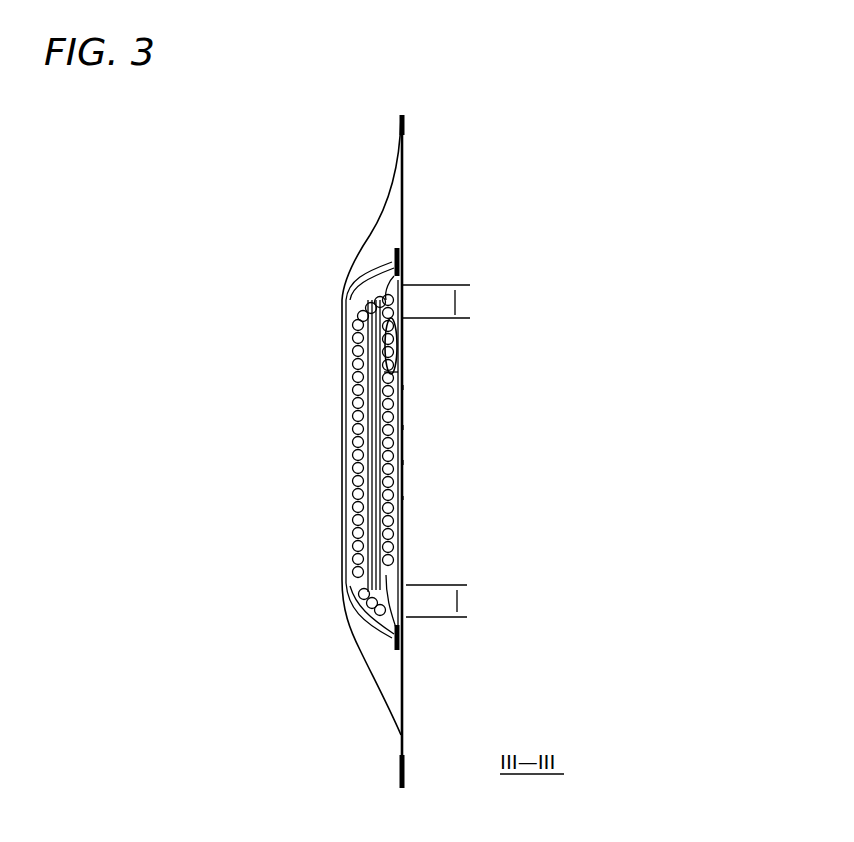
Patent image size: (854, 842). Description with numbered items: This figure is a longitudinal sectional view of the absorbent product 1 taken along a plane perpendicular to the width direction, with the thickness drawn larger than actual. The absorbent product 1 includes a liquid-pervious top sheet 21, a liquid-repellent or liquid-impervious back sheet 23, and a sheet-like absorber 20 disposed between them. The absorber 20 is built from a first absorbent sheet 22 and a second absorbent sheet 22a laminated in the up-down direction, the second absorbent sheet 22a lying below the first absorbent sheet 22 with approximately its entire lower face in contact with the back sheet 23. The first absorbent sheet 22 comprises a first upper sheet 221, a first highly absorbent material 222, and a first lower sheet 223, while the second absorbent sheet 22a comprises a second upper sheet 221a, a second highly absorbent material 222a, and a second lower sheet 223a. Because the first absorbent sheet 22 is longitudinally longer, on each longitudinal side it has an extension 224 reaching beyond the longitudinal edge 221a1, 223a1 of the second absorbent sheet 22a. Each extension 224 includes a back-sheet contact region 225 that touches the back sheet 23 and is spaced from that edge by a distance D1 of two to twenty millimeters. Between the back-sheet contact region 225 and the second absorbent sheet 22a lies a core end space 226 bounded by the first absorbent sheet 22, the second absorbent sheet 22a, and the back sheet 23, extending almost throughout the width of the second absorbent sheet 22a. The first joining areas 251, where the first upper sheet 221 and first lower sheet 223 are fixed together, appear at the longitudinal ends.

The absorbent product 1 is at (240, 125).
The absorber 20 is at (172, 406).
The top sheet 21 is at (385, 222).
The first absorbent sheet 22 is at (236, 457).
The second absorbent sheet 22a is at (518, 449).
The back sheet 23 is at (404, 218).
The first upper sheet 221 is at (352, 458).
The second upper sheet 221a is at (404, 427).
The longitudinal edge of second upper sheet 221a1 is at (393, 370).
The first highly absorbent material 222 is at (351, 347).
The second highly absorbent material 222a is at (404, 385).
The first lower sheet 223 is at (366, 428).
The second lower sheet 223a is at (404, 462).
The longitudinal edge of second lower sheet 223a1 is at (393, 380).
The extension 224 is at (385, 292).
The back-sheet contact region 225 is at (404, 272).
The core end space 226 is at (406, 304).
The first joining area 251 is at (404, 256).
The distance D1 is at (457, 303).